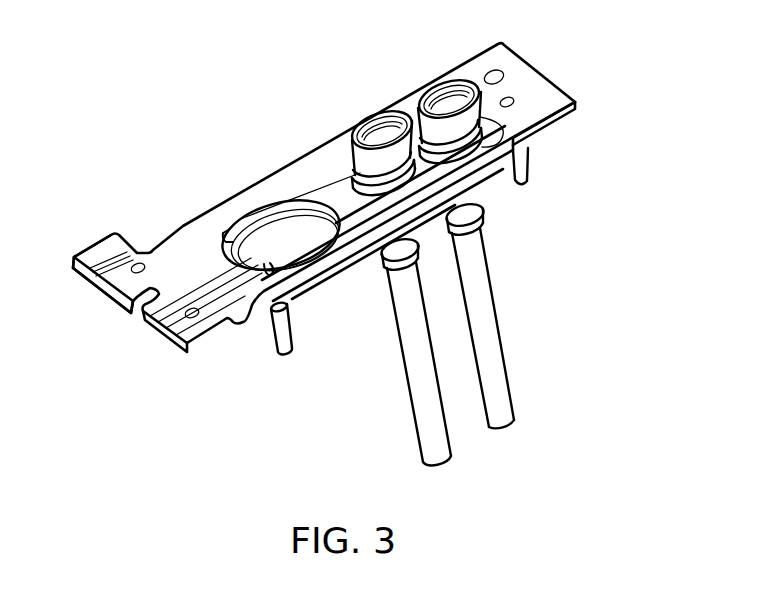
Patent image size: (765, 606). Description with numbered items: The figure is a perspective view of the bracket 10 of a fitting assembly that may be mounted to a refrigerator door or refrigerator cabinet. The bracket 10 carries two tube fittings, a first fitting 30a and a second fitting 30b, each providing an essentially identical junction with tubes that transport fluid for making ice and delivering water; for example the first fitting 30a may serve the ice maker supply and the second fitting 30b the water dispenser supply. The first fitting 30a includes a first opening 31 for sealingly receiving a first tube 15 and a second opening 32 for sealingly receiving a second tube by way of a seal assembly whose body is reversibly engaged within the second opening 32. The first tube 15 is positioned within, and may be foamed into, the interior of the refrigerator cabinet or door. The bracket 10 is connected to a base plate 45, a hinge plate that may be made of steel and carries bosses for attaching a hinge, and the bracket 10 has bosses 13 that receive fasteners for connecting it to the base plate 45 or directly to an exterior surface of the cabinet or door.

The bracket 10 is at (335, 198).
The bosses 13 is at (277, 348).
The first tube 15 is at (500, 366).
The first fitting 30a is at (470, 92).
The second fitting 30b is at (360, 176).
The first opening 31 is at (480, 193).
The second opening 32 is at (420, 82).
The base plate 45 is at (115, 258).